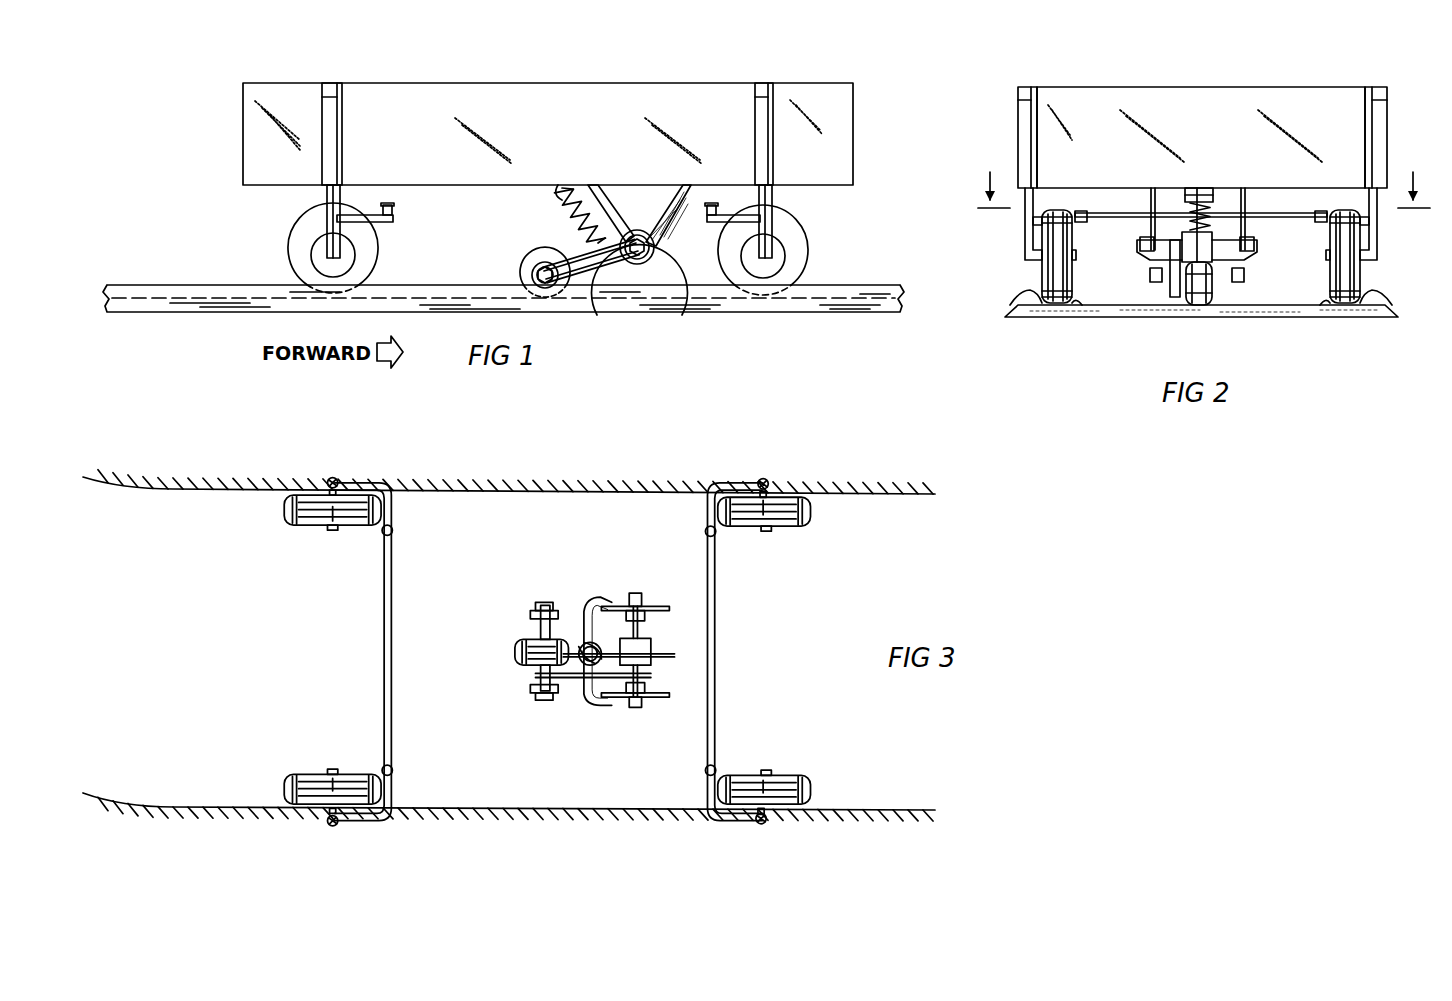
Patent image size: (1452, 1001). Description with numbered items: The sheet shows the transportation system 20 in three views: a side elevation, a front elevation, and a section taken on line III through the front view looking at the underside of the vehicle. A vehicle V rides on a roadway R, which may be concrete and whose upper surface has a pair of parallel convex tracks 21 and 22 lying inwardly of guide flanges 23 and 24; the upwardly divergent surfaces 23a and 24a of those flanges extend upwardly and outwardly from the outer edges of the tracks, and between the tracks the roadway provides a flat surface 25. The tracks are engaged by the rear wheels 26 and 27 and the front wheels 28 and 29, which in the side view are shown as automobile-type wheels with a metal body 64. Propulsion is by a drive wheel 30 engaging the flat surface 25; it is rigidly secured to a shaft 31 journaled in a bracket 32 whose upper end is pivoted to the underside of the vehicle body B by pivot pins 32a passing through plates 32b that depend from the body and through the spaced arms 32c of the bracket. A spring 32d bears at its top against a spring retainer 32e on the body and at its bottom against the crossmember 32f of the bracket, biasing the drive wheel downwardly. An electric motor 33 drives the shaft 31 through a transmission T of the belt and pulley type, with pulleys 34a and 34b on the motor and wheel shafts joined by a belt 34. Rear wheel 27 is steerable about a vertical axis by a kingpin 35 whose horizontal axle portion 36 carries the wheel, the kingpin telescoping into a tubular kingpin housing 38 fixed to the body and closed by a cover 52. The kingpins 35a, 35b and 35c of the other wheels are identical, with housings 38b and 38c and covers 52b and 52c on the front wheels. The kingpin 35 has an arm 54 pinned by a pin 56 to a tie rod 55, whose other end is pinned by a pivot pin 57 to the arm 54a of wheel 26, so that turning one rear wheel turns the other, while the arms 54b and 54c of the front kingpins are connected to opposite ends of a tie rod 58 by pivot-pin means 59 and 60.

In FIG. 1, the transportation system 20 is at (547, 60).
In FIG. 1, the vehicle V is at (646, 80).
In FIG. 1, the vehicle body B is at (853, 128).
In FIG. 2, the vehicle body B is at (1190, 133).
In FIG. 1, the roadway R is at (806, 320).
In FIG. 2, the roadway R is at (1098, 319).
In FIG. 1, the transmission T is at (612, 273).
In FIG. 3, the transmission T is at (590, 681).
In FIG. 2, the section line III- III is at (1204, 176).
In FIG. 2, the track 21 is at (1072, 305).
In FIG. 2, the track 22 is at (1328, 302).
In FIG. 2, the guide structure or flange 23 is at (1014, 284).
In FIG. 2, the upwardly divergent surface 23a is at (1020, 275).
In FIG. 2, the guide structure or flange 24 is at (1388, 290).
In FIG. 2, the upwardly divergent surface 24a is at (1382, 283).
In FIG. 2, the flat surface 25 is at (1205, 306).
In FIG. 3, the rear wheel 26 is at (306, 523).
In FIG. 1, the rear wheel 27 is at (379, 257).
In FIG. 3, the rear wheel 27 is at (297, 764).
In FIG. 2, the front wheel 28 is at (1329, 241).
In FIG. 3, the front wheel 28 is at (782, 523).
In FIG. 1, the front wheel 29 is at (812, 268).
In FIG. 2, the front wheel 29 is at (1057, 214).
In FIG. 3, the front wheel 29 is at (768, 765).
In FIG. 1, the drive wheel 30 is at (525, 256).
In FIG. 3, the drive wheel 30 is at (513, 649).
In FIG. 3, the shaft 31 is at (538, 625).
In FIG. 3, the bracket 32 is at (589, 593).
In FIG. 3, the pivot pin 32a is at (630, 588).
In FIG. 1, the plate 32b is at (628, 208).
In FIG. 3, the plate 32b is at (665, 645).
In FIG. 3, the spaced arm 32c is at (640, 605).
In FIG. 1, the spring 32d is at (573, 217).
In FIG. 3, the spring 32d is at (576, 636).
In FIG. 1, the spring retainer 32e is at (556, 192).
In FIG. 1, the crossmember 32f is at (586, 259).
In FIG. 3, the crossmember 32f is at (581, 625).
In FIG. 3, the electric motor 33 is at (647, 646).
In FIG. 1, the belt 34 is at (596, 315).
In FIG. 3, the belt 34 is at (565, 672).
In FIG. 1, the pulley 34a is at (682, 315).
In FIG. 3, the pulley 34a is at (645, 670).
In FIG. 1, the pulley 34b is at (531, 273).
In FIG. 3, the pulley 34b is at (526, 671).
In FIG. 3, the kingpin 35 is at (316, 813).
In FIG. 3, the kingpin 35a is at (328, 476).
In FIG. 2, the kingpin 35b is at (1388, 221).
In FIG. 3, the kingpin 35b is at (756, 477).
In FIG. 3, the kingpin 35c is at (762, 811).
In FIG. 3, the horizontal axle portion 36 is at (328, 759).
In FIG. 1, the kingpin housing 38 is at (345, 172).
In FIG. 2, the kingpin housing 38b is at (1388, 115).
In FIG. 1, the kingpin housing 38c is at (775, 172).
In FIG. 2, the kingpin housing 38c is at (1021, 112).
In FIG. 1, the cover 52 is at (330, 83).
In FIG. 2, the cover 52b is at (1378, 87).
In FIG. 1, the cover 52c is at (764, 83).
In FIG. 2, the cover 52c is at (1028, 87).
In FIG. 1, the arm 54 is at (384, 224).
In FIG. 3, the arm 54 is at (384, 778).
In FIG. 3, the arm 54a is at (384, 506).
In FIG. 3, the arm 54b is at (718, 482).
In FIG. 1, the arm 54c is at (714, 238).
In FIG. 3, the arm 54c is at (710, 811).
In FIG. 3, the tie rod 55 is at (375, 637).
In FIG. 1, the pin 56 is at (395, 210).
In FIG. 3, the pin 56 is at (384, 757).
In FIG. 3, the pivot pin 57 is at (385, 527).
In FIG. 2, the tie rod 58 is at (1254, 214).
In FIG. 3, the tie rod 58 is at (708, 579).
In FIG. 1, the pivot-pin means 59 is at (714, 214).
In FIG. 2, the pivot-pin means 59 is at (1084, 221).
In FIG. 3, the pivot-pin means 59 is at (698, 762).
In FIG. 2, the pivot-pin means 60 is at (1319, 219).
In FIG. 3, the pivot-pin means 60 is at (698, 526).
In FIG. 1, the metal body 64 is at (323, 233).